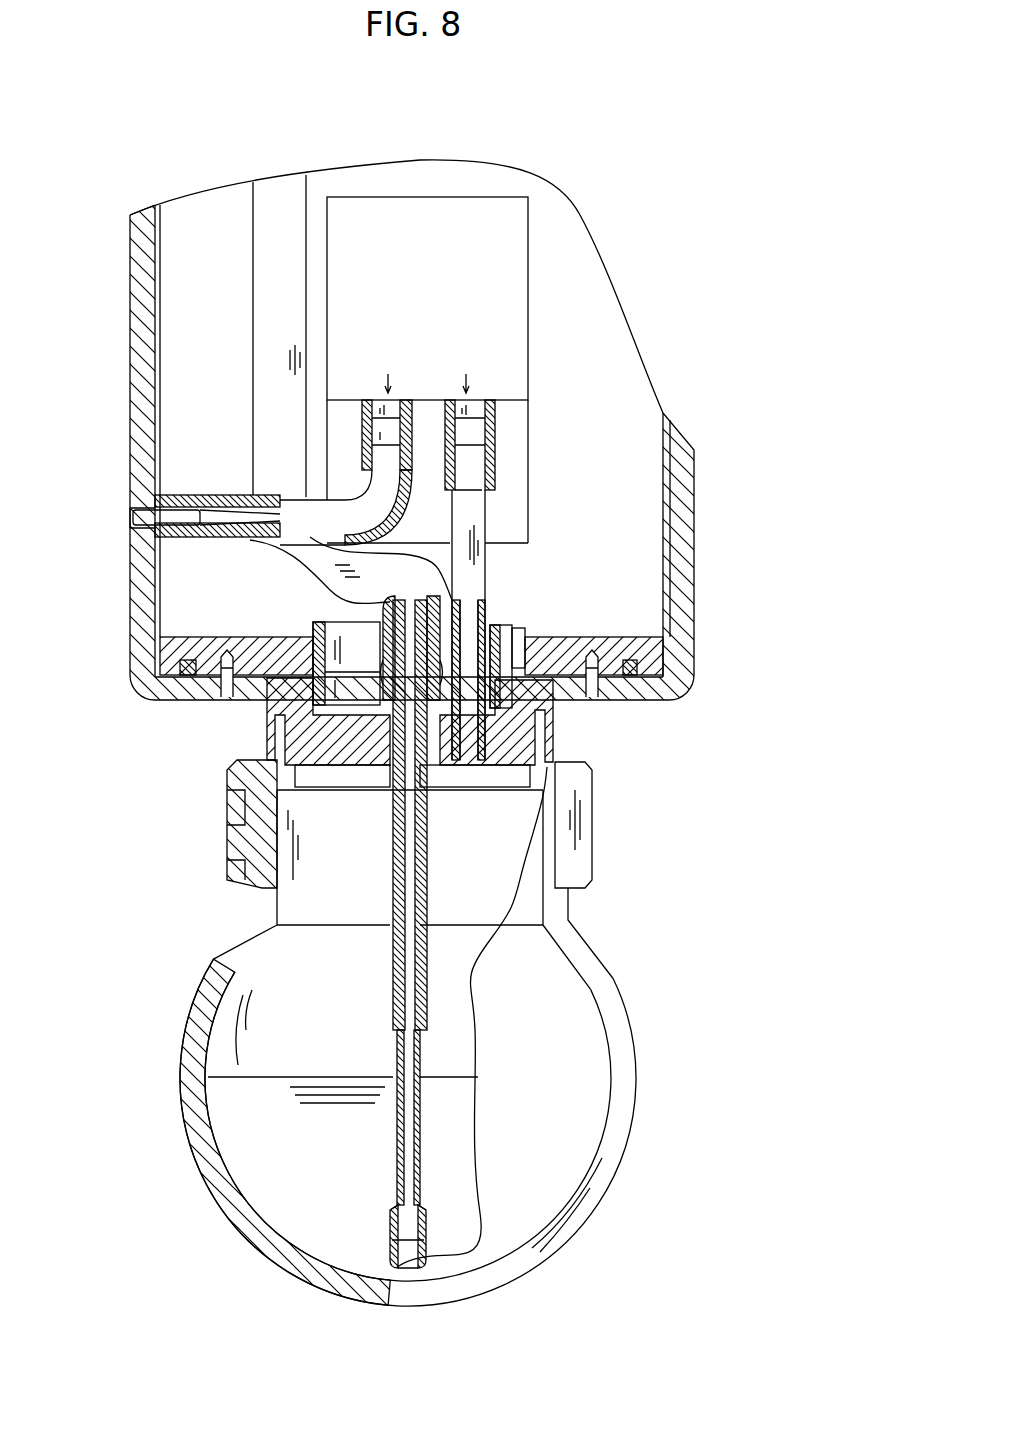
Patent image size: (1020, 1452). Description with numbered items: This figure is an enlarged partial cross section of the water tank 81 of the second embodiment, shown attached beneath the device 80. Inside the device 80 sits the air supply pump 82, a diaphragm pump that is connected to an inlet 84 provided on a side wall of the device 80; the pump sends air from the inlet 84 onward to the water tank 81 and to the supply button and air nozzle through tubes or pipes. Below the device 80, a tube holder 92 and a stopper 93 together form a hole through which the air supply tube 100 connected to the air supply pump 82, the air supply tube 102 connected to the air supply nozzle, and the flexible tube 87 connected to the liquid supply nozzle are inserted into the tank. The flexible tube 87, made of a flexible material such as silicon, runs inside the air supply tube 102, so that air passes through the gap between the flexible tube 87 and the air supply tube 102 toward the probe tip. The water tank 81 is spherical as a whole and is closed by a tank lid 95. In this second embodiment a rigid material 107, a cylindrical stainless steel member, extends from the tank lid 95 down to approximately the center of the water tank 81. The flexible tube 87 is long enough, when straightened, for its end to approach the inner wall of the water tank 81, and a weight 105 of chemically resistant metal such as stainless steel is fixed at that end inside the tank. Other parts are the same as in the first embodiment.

The device 80 is at (706, 560).
The water tank 81 is at (636, 1068).
The air supply pump 82 is at (433, 222).
The inlet 84 is at (128, 518).
The flexible tube 87 is at (397, 1055).
The tube holder 92 is at (313, 635).
The stopper 93 is at (267, 722).
The tank lid 95 is at (227, 848).
The air supply tube 100 is at (487, 610).
The air supply tube 102 is at (383, 605).
The weight 105 is at (375, 1266).
The rigid material 107 is at (393, 955).